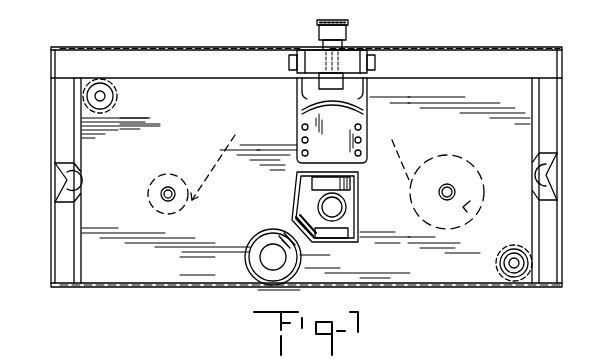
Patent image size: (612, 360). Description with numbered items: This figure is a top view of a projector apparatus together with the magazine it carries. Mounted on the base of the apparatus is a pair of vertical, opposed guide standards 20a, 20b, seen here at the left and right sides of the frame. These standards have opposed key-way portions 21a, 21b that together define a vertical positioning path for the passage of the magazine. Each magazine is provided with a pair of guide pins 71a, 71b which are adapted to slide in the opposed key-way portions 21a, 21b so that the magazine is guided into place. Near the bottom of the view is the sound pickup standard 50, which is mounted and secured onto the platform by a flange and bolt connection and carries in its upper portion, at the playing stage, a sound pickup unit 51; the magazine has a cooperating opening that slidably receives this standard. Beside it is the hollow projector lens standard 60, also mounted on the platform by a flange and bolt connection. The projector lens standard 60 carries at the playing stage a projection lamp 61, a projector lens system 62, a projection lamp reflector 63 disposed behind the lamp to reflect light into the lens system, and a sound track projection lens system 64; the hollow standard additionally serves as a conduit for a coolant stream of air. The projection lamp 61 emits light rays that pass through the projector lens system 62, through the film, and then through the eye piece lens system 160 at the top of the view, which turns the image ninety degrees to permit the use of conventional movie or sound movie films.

The guide standard 20a is at (55, 160).
The guide standard 20b is at (557, 205).
The key-way portion 21a is at (63, 180).
The key-way portion 21b is at (557, 180).
The guide pin 71a is at (82, 178).
The guide pin 71b is at (536, 177).
The eye piece lens system 160 is at (339, 45).
The sound pickup standard 50 is at (258, 252).
The sound pickup unit 51 is at (262, 238).
The projector lens standard 60 is at (334, 240).
The projection lamp 61 is at (347, 209).
The projector lens system 62 is at (350, 183).
The projection lamp reflector 63 is at (346, 238).
The sound track projection lens system 64 is at (298, 221).